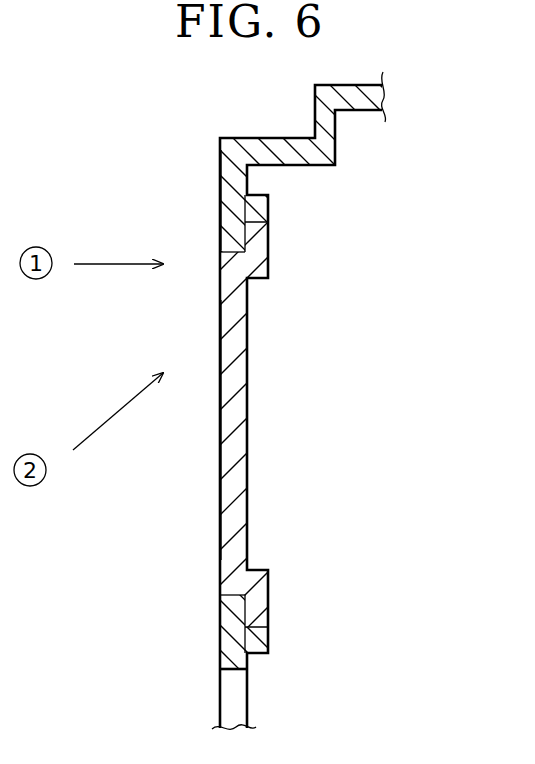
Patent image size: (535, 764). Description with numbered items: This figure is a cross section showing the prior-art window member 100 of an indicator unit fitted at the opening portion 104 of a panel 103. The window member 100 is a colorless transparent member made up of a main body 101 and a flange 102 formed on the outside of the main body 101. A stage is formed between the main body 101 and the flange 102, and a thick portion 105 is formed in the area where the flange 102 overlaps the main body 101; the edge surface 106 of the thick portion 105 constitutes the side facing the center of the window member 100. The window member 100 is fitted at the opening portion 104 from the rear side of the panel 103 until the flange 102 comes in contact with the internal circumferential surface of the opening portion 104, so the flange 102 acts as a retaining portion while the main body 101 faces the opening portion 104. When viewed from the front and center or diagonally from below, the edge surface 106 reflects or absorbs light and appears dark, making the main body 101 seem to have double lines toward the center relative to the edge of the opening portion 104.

The window member 100 is at (252, 410).
The main body 101 is at (249, 450).
The flange 102 is at (270, 233).
The panel 103 is at (220, 191).
The opening portion 104 is at (217, 270).
The thick portion 105 is at (270, 268).
The edge surface 106 is at (262, 282).